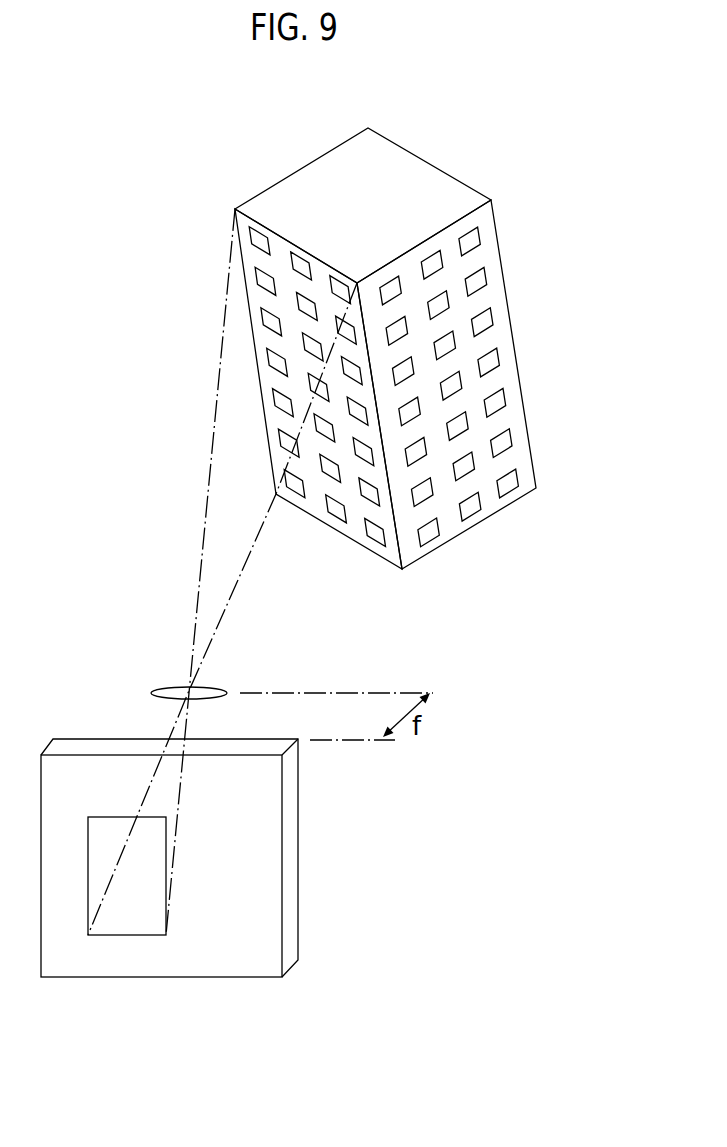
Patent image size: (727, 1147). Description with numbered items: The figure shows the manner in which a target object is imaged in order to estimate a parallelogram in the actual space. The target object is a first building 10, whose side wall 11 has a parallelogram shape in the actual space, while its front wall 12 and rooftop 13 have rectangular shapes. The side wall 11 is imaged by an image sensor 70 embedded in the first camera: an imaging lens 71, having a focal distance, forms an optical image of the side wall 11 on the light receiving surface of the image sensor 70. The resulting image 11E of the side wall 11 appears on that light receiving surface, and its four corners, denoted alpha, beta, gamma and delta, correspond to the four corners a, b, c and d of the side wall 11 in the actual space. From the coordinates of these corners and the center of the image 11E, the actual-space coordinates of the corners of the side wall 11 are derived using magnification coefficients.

The first building 10 is at (440, 152).
The side wall 11 is at (352, 528).
The front wall 12 is at (498, 335).
The rooftop 13 is at (298, 199).
The imaging lens 71 is at (210, 685).
The image sensor 70 is at (290, 888).
The image of the side wall 11E is at (158, 880).